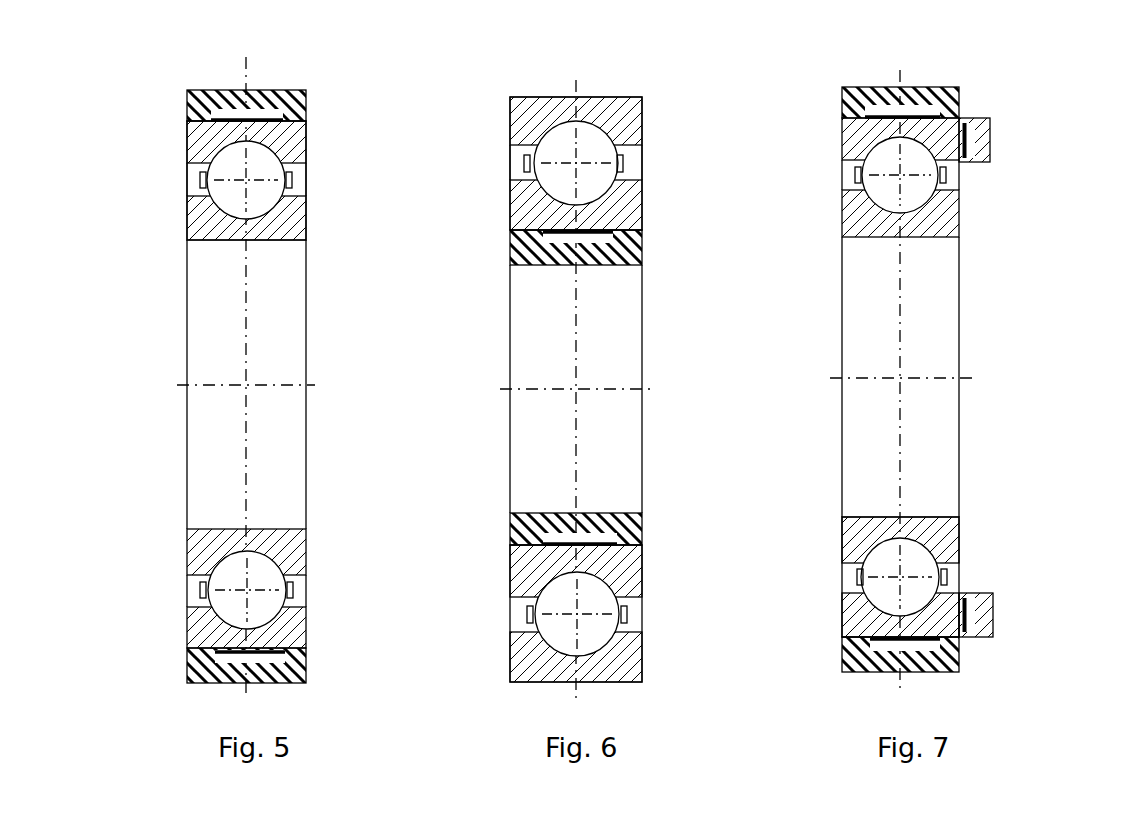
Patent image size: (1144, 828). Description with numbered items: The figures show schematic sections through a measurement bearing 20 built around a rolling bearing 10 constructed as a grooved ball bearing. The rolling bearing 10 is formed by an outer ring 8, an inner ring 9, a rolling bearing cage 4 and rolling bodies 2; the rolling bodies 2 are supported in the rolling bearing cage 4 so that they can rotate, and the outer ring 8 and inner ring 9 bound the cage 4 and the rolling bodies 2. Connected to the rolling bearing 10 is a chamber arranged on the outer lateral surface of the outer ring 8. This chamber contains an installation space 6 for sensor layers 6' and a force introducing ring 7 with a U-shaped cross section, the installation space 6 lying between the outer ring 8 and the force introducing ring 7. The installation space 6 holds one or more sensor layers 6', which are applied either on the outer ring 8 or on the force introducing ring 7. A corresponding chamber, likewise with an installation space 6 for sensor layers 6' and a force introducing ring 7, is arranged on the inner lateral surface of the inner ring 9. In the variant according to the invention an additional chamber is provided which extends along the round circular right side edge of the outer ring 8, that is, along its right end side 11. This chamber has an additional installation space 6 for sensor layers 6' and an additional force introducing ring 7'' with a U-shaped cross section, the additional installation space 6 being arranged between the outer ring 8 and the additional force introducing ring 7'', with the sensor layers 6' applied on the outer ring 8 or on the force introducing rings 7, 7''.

In FIG. 5, the rolling bodies 2 is at (262, 163).
In FIG. 6, the rolling bodies 2 is at (600, 145).
In FIG. 7, the rolling bodies 2 is at (932, 155).
In FIG. 5, the rolling bearing cage 4 is at (197, 173).
In FIG. 6, the rolling bearing cage 4 is at (525, 163).
In FIG. 7, the rolling bearing cage 4 is at (857, 173).
In FIG. 5, the installation space 6 is at (246, 68).
In FIG. 6, the installation space 6 is at (609, 214).
In FIG. 7, the installation space 6 is at (932, 651).
In FIG. 5, the sensor layers 6' is at (309, 679).
In FIG. 6, the sensor layers 6' is at (639, 502).
In FIG. 7, the sensor layers 6' is at (919, 96).
In FIG. 5, the force introducing ring 7 is at (214, 665).
In FIG. 6, the force introducing ring 7 is at (541, 525).
In FIG. 7, the force introducing ring 7 is at (888, 73).
In FIG. 7, the additional force introducing ring 7'' is at (1039, 116).
In FIG. 5, the outer ring 8 is at (300, 634).
In FIG. 6, the outer ring 8 is at (635, 664).
In FIG. 7, the outer ring 8 is at (855, 627).
In FIG. 5, the inner ring 9 is at (295, 542).
In FIG. 6, the inner ring 9 is at (633, 574).
In FIG. 7, the inner ring 9 is at (945, 540).
In FIG. 5, the rolling bearing 10 is at (122, 120).
In FIG. 6, the rolling bearing 10 is at (505, 548).
In FIG. 7, the rolling bearing 10 is at (806, 515).
In FIG. 5, the right end side 11 is at (303, 135).
In FIG. 6, the right end side 11 is at (637, 117).
In FIG. 5, the measurement bearing 20 is at (317, 340).
In FIG. 6, the measurement bearing 20 is at (660, 347).
In FIG. 7, the measurement bearing 20 is at (968, 337).